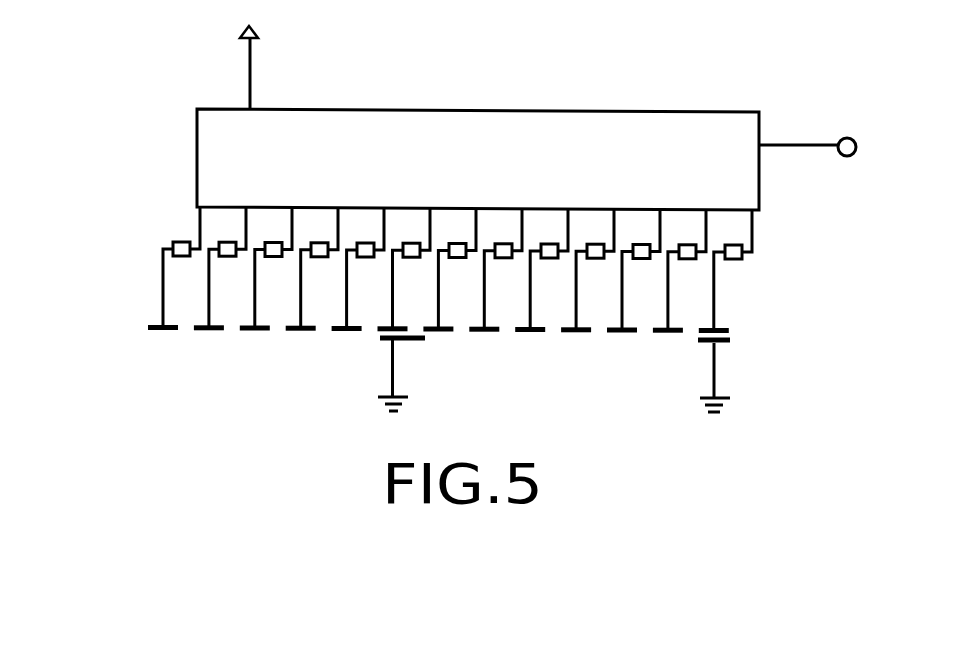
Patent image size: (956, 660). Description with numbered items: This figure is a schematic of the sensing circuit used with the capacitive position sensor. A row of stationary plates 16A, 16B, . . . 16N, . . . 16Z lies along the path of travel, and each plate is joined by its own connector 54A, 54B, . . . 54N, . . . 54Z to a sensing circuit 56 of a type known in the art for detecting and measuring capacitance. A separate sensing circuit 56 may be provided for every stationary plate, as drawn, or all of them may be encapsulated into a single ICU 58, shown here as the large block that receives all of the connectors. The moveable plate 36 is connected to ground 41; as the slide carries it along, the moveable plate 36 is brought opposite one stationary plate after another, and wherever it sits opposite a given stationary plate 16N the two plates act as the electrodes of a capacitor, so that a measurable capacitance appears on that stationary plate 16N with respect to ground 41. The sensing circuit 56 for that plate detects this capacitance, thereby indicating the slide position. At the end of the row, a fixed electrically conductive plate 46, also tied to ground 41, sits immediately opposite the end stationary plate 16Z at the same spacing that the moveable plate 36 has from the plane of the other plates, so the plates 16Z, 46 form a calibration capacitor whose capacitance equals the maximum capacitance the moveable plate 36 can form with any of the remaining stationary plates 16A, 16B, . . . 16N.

The ICU 58 is at (492, 177).
The sensing circuit 56 is at (178, 241).
The connector 54A is at (162, 278).
The connector 54B is at (207, 290).
The connector 54N is at (393, 273).
The connector 54Z is at (710, 290).
The stationary plate 16A is at (160, 331).
The stationary plate 16B is at (215, 331).
The stationary plate 16N is at (405, 322).
The end stationary plate 16Z is at (723, 330).
The moveable plate 36 is at (423, 340).
The fixed electrically conductive plate 46 is at (722, 342).
The ground 41 is at (407, 397).